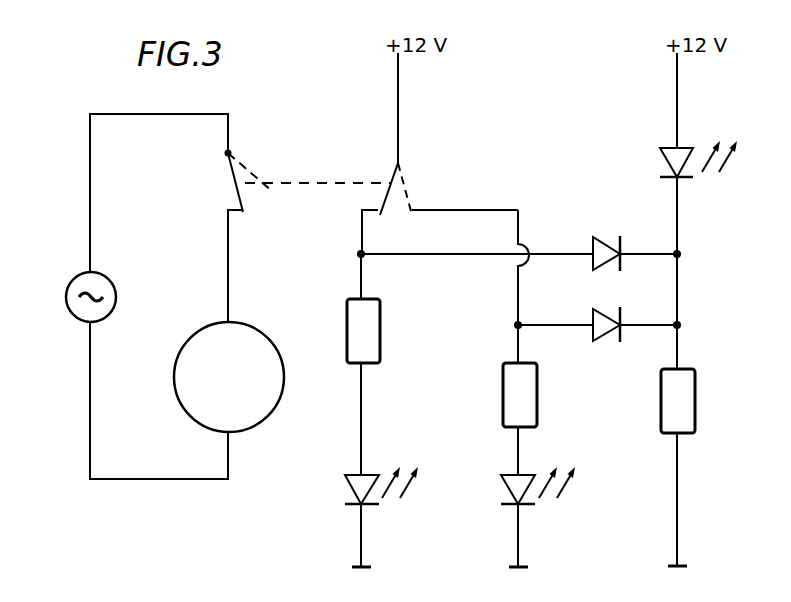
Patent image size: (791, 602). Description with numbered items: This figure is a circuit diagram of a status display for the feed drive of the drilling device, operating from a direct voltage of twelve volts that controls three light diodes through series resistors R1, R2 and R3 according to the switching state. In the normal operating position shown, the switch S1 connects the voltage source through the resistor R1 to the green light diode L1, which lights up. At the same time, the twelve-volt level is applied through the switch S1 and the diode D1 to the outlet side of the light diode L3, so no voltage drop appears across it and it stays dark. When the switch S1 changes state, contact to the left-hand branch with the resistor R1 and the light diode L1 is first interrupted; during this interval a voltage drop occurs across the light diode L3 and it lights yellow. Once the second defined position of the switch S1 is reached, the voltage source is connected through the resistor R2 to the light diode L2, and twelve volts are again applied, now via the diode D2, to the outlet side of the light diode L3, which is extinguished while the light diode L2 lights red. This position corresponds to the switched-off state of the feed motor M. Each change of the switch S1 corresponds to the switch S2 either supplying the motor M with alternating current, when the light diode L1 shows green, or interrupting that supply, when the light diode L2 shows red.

The feed motor M is at (229, 377).
The switch S1 is at (440, 153).
The switch S2 is at (293, 181).
The series resistor R1 is at (363, 331).
The series resistor R2 is at (520, 395).
The series resistor R3 is at (678, 401).
The diode D1 is at (603, 239).
The diode D2 is at (603, 313).
The light diode L1 is at (364, 472).
The light diode L2 is at (529, 472).
The light diode L3 is at (679, 159).